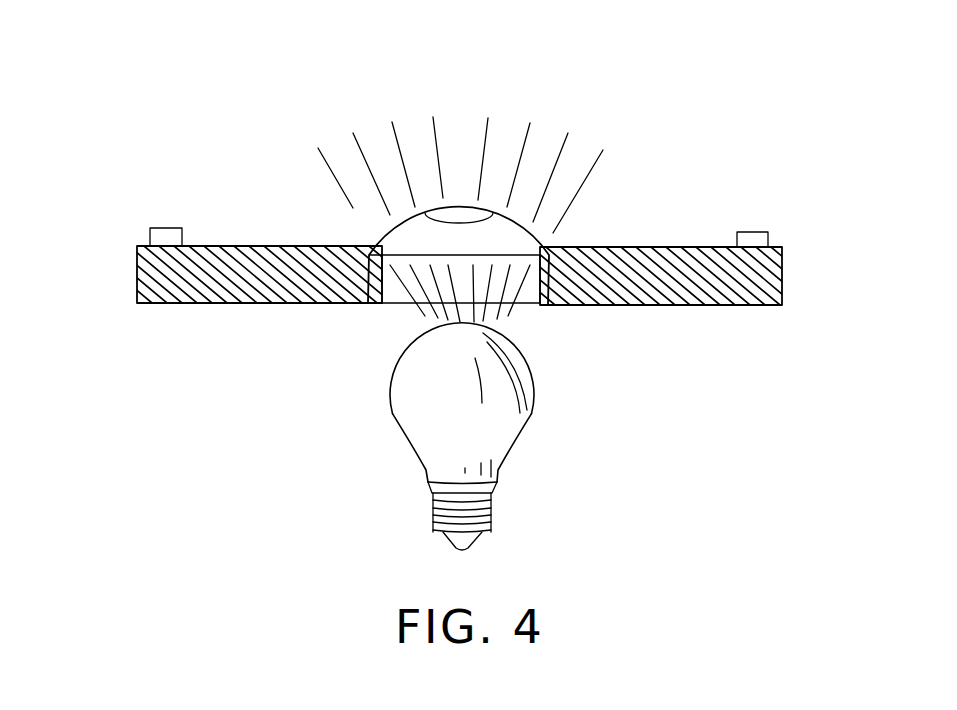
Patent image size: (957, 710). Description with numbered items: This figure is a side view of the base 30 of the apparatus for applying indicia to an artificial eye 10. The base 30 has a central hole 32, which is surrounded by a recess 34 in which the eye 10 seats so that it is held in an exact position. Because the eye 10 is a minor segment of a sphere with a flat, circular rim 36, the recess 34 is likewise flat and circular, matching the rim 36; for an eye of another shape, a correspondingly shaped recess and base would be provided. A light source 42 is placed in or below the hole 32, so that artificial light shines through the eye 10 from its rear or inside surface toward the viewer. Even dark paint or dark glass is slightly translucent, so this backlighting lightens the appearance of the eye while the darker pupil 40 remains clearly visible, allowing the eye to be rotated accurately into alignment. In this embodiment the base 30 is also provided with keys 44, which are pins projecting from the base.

The eye 10 is at (407, 243).
The base 30 is at (765, 276).
The central hole 32 is at (445, 306).
The recess 34 is at (547, 305).
The rim 36 is at (368, 303).
The pupil 40 is at (463, 207).
The light source 42 is at (452, 424).
The keys 44 is at (150, 238).